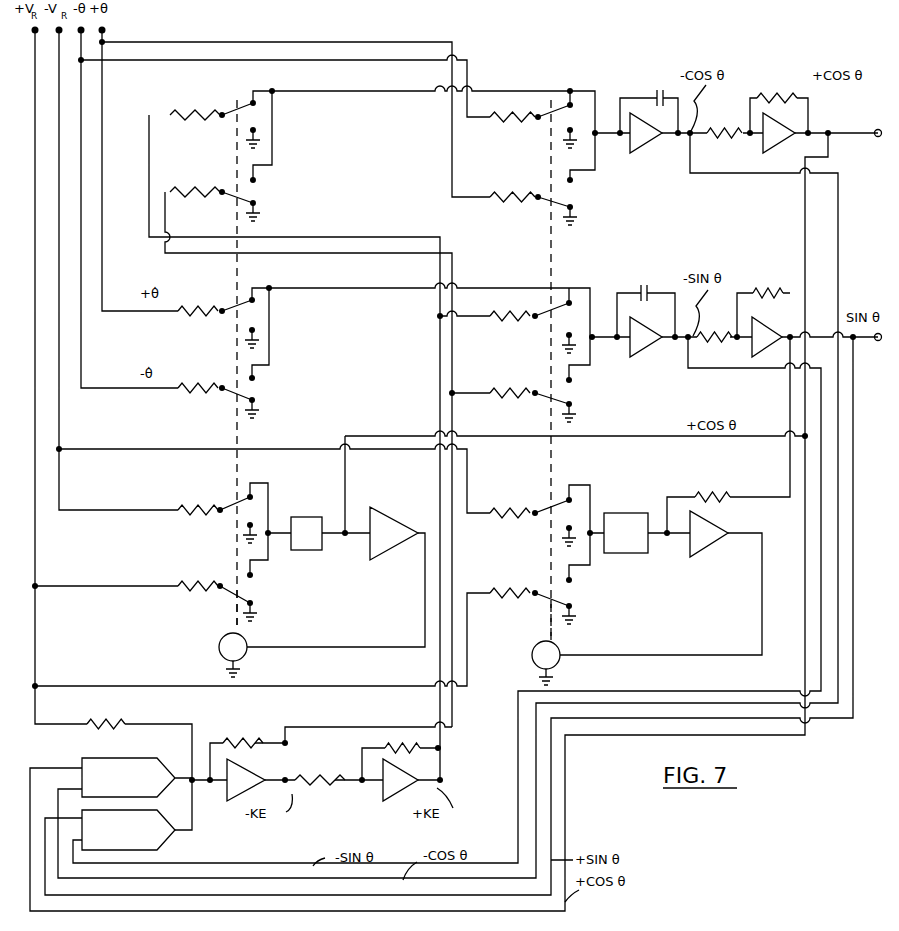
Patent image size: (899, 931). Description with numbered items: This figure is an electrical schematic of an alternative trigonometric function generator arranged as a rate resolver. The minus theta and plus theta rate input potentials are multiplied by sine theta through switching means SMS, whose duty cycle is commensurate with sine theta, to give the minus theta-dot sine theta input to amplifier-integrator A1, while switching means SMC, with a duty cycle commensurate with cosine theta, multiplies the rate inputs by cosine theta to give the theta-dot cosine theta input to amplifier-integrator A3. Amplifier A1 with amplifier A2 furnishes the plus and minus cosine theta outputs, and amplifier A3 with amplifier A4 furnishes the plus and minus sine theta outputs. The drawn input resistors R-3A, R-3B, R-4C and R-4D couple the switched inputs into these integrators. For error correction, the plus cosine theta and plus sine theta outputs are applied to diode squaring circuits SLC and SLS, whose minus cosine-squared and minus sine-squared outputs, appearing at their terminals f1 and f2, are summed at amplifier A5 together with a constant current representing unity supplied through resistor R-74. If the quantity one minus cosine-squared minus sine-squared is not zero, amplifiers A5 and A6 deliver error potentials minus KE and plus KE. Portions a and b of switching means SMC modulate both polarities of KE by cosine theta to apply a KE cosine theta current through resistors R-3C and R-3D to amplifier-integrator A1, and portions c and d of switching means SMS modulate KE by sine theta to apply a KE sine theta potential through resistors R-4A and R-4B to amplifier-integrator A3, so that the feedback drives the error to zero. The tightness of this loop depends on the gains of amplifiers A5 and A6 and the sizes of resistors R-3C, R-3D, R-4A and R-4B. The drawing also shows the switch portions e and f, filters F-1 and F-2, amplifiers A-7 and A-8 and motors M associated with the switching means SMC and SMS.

The resistor R-3A is at (527, 113).
The resistor R-3B is at (532, 192).
The resistor R-3C is at (226, 109).
The resistor R-3D is at (172, 175).
The resistor R-4A is at (490, 324).
The resistor R-4B is at (490, 402).
The resistor R-4C is at (178, 326).
The resistor R-4D is at (178, 400).
The resistor R-74 is at (106, 710).
The amplifier-integrator A1 is at (646, 133).
The amplifier A2 is at (779, 133).
The amplifier-integrator A3 is at (646, 337).
The amplifier A4 is at (767, 337).
The summing amplifier A5 is at (246, 780).
The amplifier A6 is at (400, 780).
The servo amplifier A-7 is at (394, 533).
The servo amplifier A-8 is at (709, 534).
The filter F-1 is at (306, 533).
The filter F-2 is at (626, 533).
The servo motor M is at (389, 651).
The switching means SMC is at (228, 603).
The switching means SMS is at (547, 615).
The diode squaring circuit SLC is at (137, 777).
The diode squaring circuit SLS is at (128, 830).
The portion of switching means SMC a is at (556, 112).
The portion of switching means SMC b is at (569, 205).
The portion of switching means SMS c is at (561, 328).
The portion of switching means SMS d is at (581, 396).
The switch contact e is at (567, 517).
The switch contact f is at (567, 601).
The selector output f1 is at (180, 772).
The selector output f2 is at (180, 833).